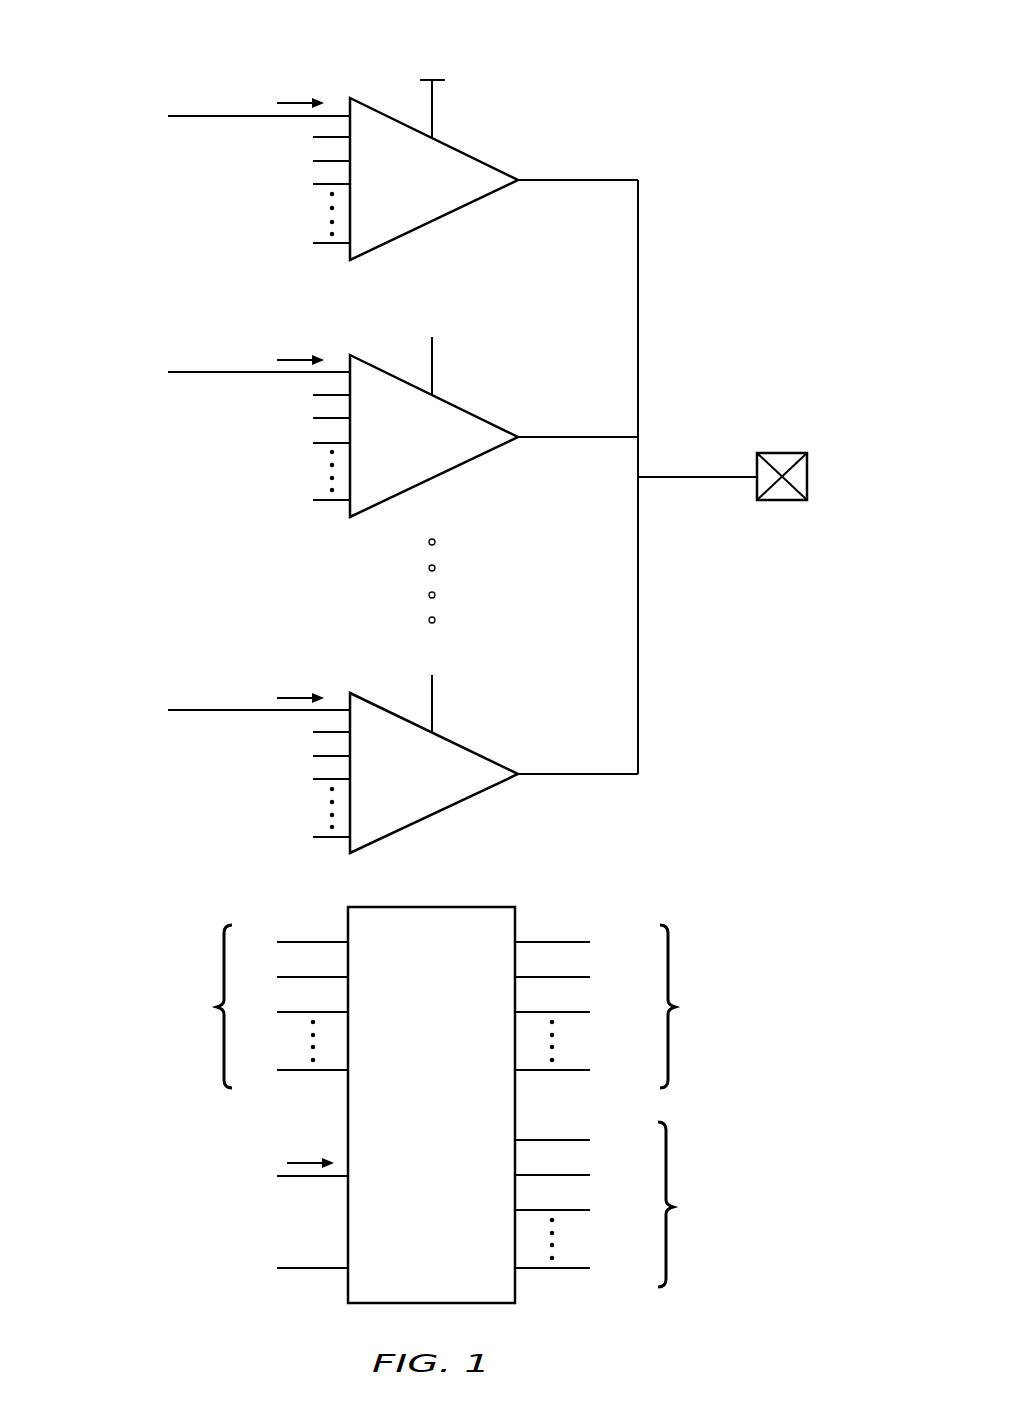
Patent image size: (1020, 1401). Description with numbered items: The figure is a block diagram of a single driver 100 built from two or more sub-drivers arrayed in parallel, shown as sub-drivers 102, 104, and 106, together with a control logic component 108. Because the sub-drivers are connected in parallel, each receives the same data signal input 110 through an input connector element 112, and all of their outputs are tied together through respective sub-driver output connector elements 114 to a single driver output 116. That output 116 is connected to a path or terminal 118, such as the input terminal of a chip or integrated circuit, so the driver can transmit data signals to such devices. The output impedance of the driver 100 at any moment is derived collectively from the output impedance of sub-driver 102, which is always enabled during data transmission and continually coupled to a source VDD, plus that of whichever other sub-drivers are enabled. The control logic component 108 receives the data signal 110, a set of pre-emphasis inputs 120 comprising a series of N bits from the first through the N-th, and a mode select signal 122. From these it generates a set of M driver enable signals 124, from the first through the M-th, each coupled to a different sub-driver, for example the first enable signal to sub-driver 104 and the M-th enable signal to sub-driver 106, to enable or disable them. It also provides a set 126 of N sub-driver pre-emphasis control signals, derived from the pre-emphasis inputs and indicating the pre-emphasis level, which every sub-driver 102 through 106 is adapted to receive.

The driver 100 is at (580, 70).
The sub-driver 102 is at (447, 215).
The sub-driver 104 is at (447, 472).
The sub-driver 106 is at (447, 810).
The control logic component 108 is at (452, 1150).
The data signal input 110 is at (293, 101).
The input connector element 112 is at (218, 118).
The sub-driver output connector element 114 is at (578, 177).
The driver output 116 is at (698, 472).
The path or terminal 118 is at (782, 452).
The pre-emphasis inputs 120 is at (200, 1006).
The mode select signal 122 is at (312, 1272).
The driver enable signals 124 is at (685, 1006).
The set of sub-driver pre-emphasis control signals 126 is at (550, 1272).